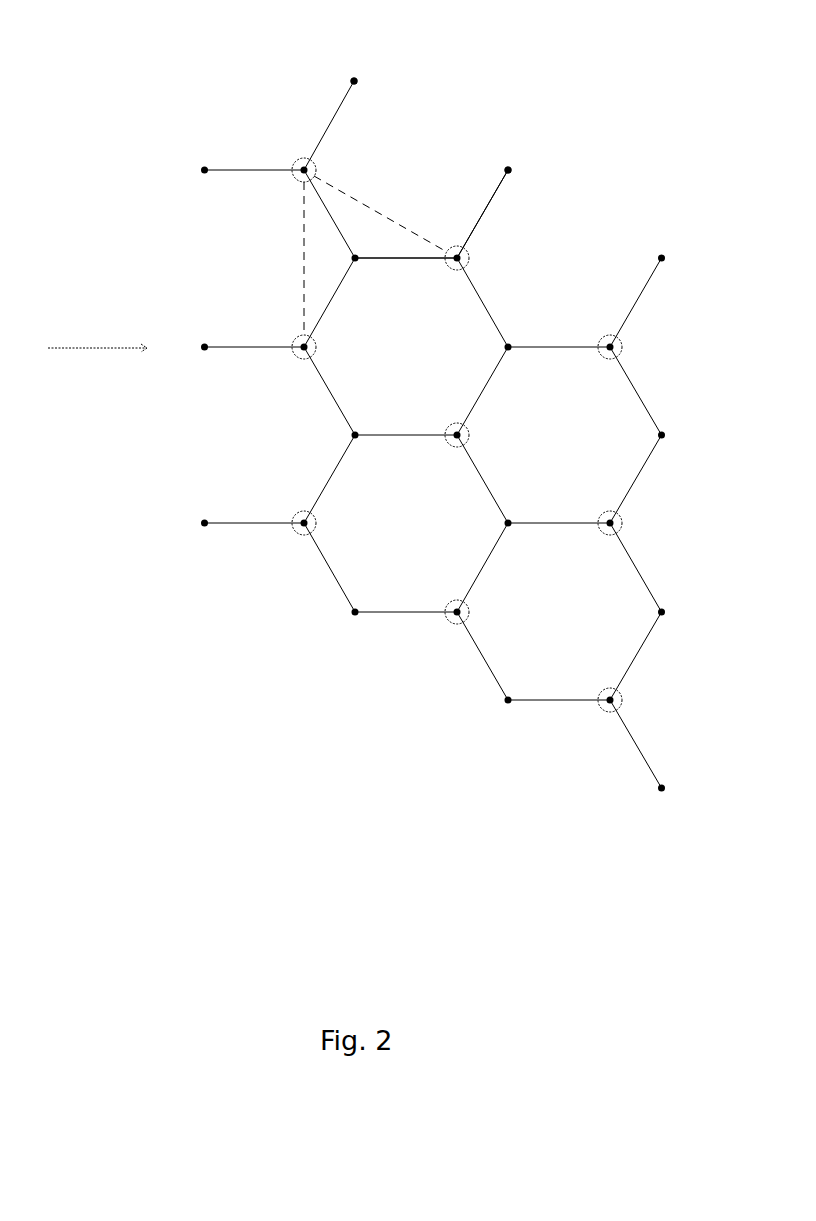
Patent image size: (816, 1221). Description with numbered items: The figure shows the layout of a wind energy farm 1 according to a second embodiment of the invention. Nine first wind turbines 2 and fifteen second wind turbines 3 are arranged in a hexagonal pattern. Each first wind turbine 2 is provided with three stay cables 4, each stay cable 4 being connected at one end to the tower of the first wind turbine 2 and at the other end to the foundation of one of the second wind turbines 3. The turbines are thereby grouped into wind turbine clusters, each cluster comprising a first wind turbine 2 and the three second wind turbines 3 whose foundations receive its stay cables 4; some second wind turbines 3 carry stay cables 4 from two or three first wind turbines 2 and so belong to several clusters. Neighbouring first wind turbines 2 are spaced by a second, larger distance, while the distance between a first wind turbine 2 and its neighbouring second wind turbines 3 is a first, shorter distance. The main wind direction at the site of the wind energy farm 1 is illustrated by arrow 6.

The wind energy farm 1 is at (274, 745).
The first wind turbine 2 is at (300, 166).
The second wind turbine 3 is at (564, 134).
The stay cable 4 is at (421, 259).
The arrow 6 is at (95, 347).